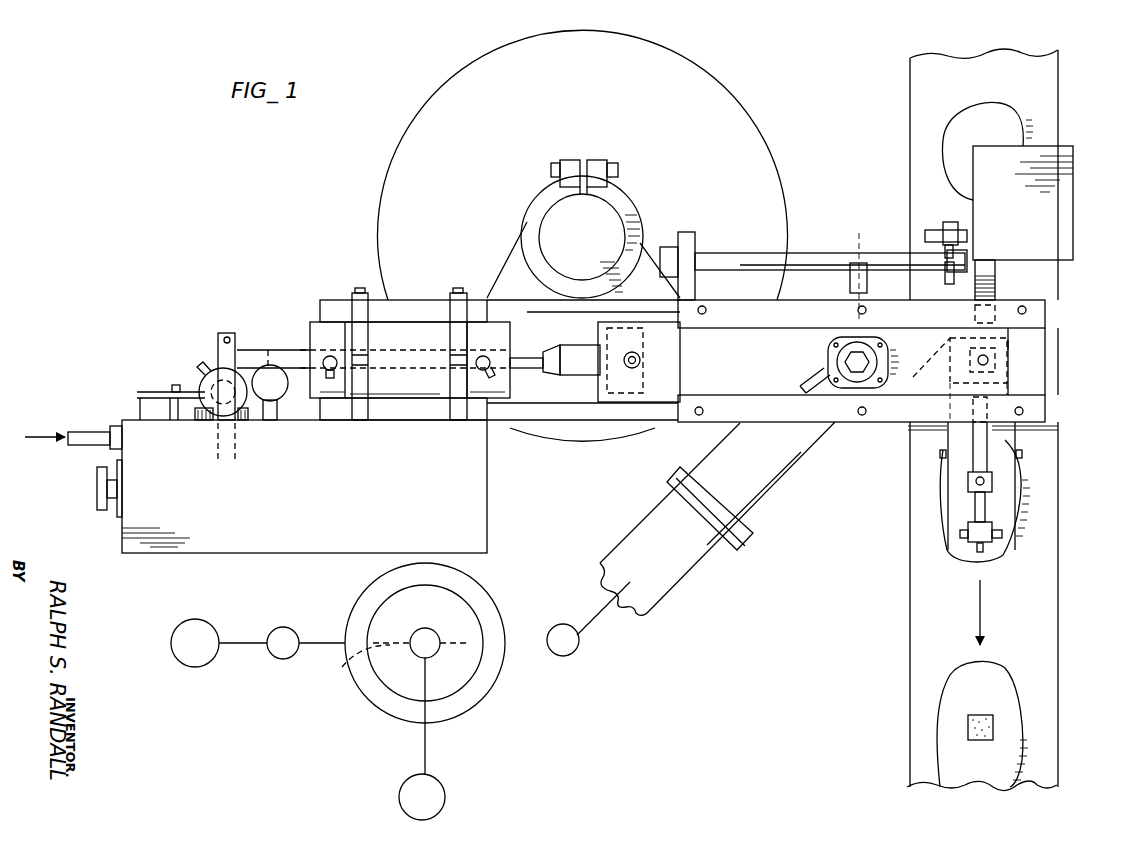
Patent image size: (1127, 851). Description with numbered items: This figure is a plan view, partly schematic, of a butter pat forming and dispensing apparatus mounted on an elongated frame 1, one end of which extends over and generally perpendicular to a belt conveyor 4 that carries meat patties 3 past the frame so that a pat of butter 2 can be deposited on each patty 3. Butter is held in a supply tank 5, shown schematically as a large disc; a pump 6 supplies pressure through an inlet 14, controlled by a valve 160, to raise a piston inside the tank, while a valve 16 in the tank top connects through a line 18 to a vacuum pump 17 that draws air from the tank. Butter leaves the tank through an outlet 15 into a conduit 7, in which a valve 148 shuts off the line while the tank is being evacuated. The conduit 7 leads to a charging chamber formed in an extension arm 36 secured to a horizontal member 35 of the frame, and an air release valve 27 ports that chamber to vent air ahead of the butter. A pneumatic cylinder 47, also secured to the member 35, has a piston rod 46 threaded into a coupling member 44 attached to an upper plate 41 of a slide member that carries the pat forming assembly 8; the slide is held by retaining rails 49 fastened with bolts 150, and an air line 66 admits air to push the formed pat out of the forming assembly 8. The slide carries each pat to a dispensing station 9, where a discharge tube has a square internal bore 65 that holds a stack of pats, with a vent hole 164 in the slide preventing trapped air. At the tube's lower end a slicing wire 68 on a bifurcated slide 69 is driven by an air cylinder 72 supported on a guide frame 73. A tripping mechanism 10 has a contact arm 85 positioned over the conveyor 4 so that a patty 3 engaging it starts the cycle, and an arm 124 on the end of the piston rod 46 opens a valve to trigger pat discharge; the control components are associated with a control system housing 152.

The frame 1 is at (640, 200).
The pat of butter 2 is at (970, 728).
The meat patty 3 is at (1000, 112).
The belt conveyor 4 is at (913, 625).
The supply tank 5 is at (897, 320).
The pump 6 is at (210, 630).
The conduit 7 is at (857, 239).
The pat forming assembly 8 is at (823, 350).
The dispensing station 9 is at (1012, 346).
The tripping mechanism 10 is at (1057, 202).
The inlet 14 is at (391, 661).
The outlet 15 is at (1000, 274).
The valve 16 is at (420, 653).
The vacuum pump 17 is at (443, 795).
The line 18 is at (425, 757).
The air release valve 27 is at (850, 284).
The horizontal member 35 is at (377, 303).
The extension arm 36 is at (572, 403).
The upper plate 41 is at (702, 377).
The coupling member 44 is at (583, 372).
The piston rod 46 is at (527, 357).
The pneumatic cylinder 47 is at (407, 328).
The retaining rails 49 is at (1033, 315).
The internal bore 65 is at (972, 367).
The air line 66 is at (812, 378).
The slicing wire 68 is at (958, 330).
The bifurcated slide 69 is at (920, 365).
The air cylinder 72 is at (987, 506).
The guide frame 73 is at (955, 500).
The contact arm 85 is at (990, 263).
The arm 124 is at (220, 357).
The valve 148 is at (577, 648).
The bolts 150 is at (706, 307).
The control system housing 152 is at (292, 485).
The valve 160 is at (278, 657).
The vent hole 164 is at (990, 360).